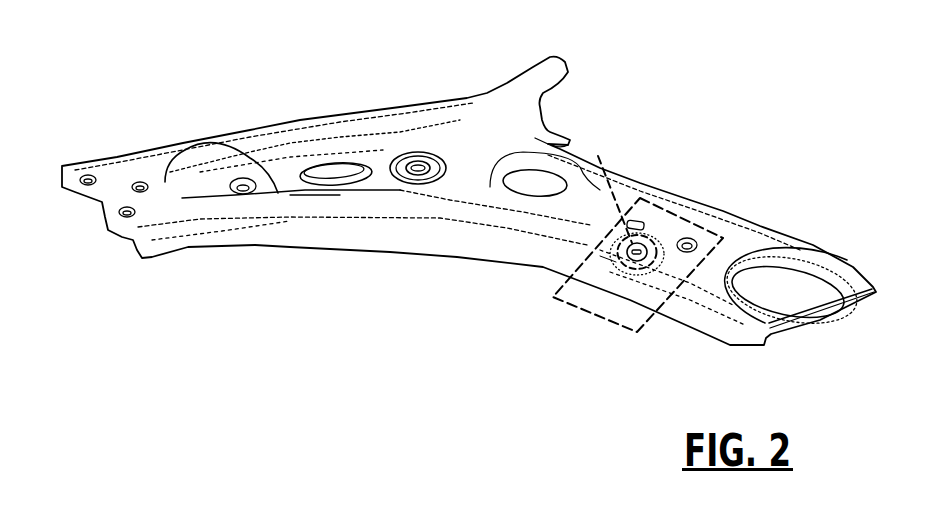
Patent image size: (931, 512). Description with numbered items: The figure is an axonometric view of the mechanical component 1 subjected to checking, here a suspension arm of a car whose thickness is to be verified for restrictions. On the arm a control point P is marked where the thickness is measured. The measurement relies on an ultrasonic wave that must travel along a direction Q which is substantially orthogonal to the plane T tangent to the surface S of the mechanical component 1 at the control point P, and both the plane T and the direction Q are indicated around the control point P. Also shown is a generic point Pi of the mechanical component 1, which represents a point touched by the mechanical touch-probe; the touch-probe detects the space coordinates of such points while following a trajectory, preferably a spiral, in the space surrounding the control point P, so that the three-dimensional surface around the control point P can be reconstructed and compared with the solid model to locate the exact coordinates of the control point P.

The mechanical component 1 is at (392, 108).
The direction Q is at (617, 190).
The control point P is at (644, 246).
The surface S is at (605, 260).
The plane T is at (567, 295).
The generic point Pi is at (635, 268).